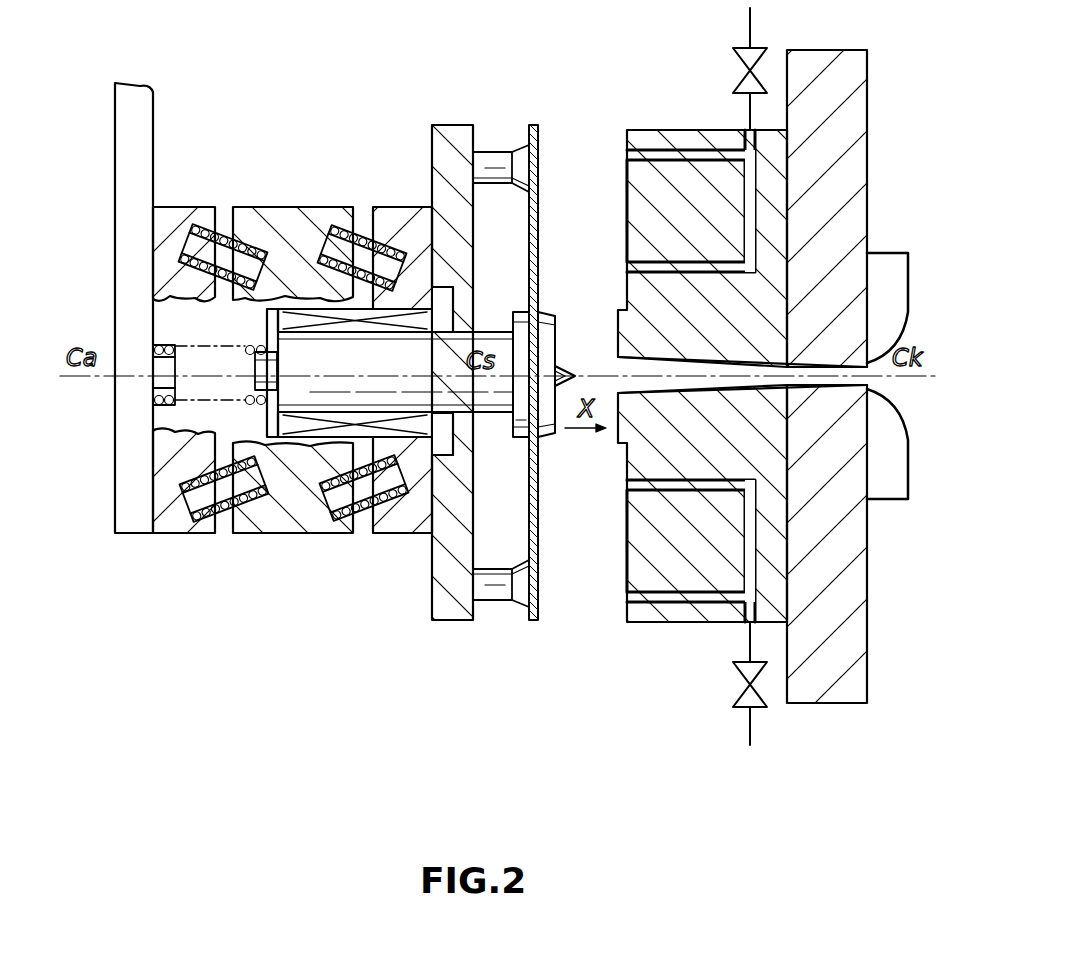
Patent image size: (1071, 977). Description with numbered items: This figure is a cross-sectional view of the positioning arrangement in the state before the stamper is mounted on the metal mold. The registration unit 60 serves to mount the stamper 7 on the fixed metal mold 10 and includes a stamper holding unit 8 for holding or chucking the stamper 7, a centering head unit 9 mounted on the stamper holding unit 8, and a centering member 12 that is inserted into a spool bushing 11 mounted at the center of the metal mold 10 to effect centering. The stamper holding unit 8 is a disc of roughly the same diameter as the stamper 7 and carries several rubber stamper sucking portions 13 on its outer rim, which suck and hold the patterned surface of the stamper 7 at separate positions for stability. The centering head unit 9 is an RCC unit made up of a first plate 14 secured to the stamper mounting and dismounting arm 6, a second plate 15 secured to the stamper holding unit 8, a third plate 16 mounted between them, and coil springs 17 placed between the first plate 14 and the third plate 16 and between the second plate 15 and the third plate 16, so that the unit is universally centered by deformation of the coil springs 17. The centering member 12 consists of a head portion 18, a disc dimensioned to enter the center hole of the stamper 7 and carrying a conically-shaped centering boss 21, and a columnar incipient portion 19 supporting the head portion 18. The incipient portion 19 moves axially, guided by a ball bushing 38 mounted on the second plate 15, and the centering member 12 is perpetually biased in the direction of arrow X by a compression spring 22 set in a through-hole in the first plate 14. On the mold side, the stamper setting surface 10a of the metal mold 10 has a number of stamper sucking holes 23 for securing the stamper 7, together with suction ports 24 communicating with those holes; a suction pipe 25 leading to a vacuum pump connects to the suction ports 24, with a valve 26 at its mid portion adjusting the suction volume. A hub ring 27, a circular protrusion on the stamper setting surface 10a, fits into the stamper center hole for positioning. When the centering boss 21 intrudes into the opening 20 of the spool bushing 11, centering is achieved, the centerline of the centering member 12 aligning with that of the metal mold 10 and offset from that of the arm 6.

The stamper mounting and dismounting arm 6 is at (118, 268).
The centering head unit 9 is at (420, 50).
The first plate 14 is at (193, 207).
The second plate 15 is at (402, 207).
The third plate 16 is at (347, 207).
The coil springs 17 is at (338, 228).
The compression spring 22 is at (180, 400).
The incipient portion 19 is at (290, 400).
The ball bushing 38 is at (421, 428).
The stamper holding unit 8 is at (445, 612).
The stamper sucking portions 13 is at (495, 150).
The stamper 7 is at (533, 620).
The centering boss 21 is at (560, 355).
The head portion 18 is at (521, 440).
The centering member 12 is at (498, 310).
The registration unit 60 is at (550, 686).
The stamper setting surface 10a is at (627, 178).
The stamper sucking holes 23 is at (693, 520).
The suction ports 24 is at (745, 555).
The suction pipe 25 is at (748, 112).
The valve 26 is at (765, 50).
The metal mold 10 is at (857, 695).
The spool bushing 11 is at (895, 499).
The opening 20 is at (617, 405).
The hub ring 27 is at (624, 446).